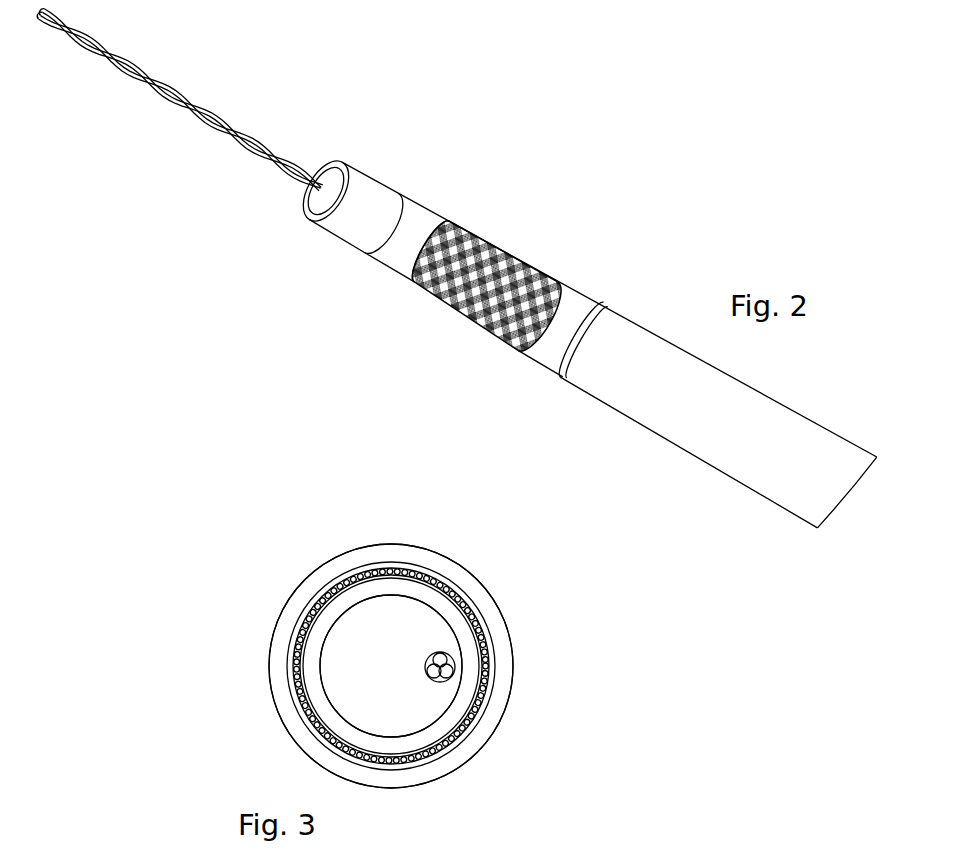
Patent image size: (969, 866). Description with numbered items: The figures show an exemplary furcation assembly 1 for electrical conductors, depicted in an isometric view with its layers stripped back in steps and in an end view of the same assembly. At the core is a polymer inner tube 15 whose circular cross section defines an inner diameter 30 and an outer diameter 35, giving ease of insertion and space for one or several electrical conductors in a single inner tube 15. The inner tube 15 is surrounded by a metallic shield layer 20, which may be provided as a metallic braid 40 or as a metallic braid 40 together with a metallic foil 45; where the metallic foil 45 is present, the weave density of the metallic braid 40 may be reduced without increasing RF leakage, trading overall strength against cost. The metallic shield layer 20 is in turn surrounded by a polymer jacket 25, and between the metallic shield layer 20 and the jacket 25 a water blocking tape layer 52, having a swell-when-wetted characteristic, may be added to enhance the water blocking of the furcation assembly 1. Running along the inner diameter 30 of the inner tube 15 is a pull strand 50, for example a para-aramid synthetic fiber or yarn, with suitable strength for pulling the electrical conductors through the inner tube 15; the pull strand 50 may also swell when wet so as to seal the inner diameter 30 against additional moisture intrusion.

In FIG. 2, the furcation assembly 1 is at (322, 275).
In FIG. 3, the furcation assembly 1 is at (372, 525).
In FIG. 2, the inner tube 15 is at (363, 197).
In FIG. 3, the inner tube 15 is at (315, 663).
In FIG. 2, the metallic shield layer 20 is at (418, 283).
In FIG. 3, the metallic shield layer 20 is at (402, 573).
In FIG. 2, the polymer jacket 25 is at (680, 415).
In FIG. 3, the polymer jacket 25 is at (340, 563).
In FIG. 2, the inner diameter 30 is at (320, 200).
In FIG. 3, the inner diameter 30 is at (332, 703).
In FIG. 3, the outer diameter 35 is at (395, 753).
In FIG. 2, the metallic braid 40 is at (488, 267).
In FIG. 3, the metallic braid 40 is at (485, 650).
In FIG. 2, the metallic foil 45 is at (423, 228).
In FIG. 3, the metallic foil 45 is at (468, 713).
In FIG. 2, the pull strand 50 is at (257, 130).
In FIG. 3, the pull strand 50 is at (443, 670).
In FIG. 2, the water blocking tape layer 52 is at (580, 328).
In FIG. 3, the water blocking tape layer 52 is at (462, 593).